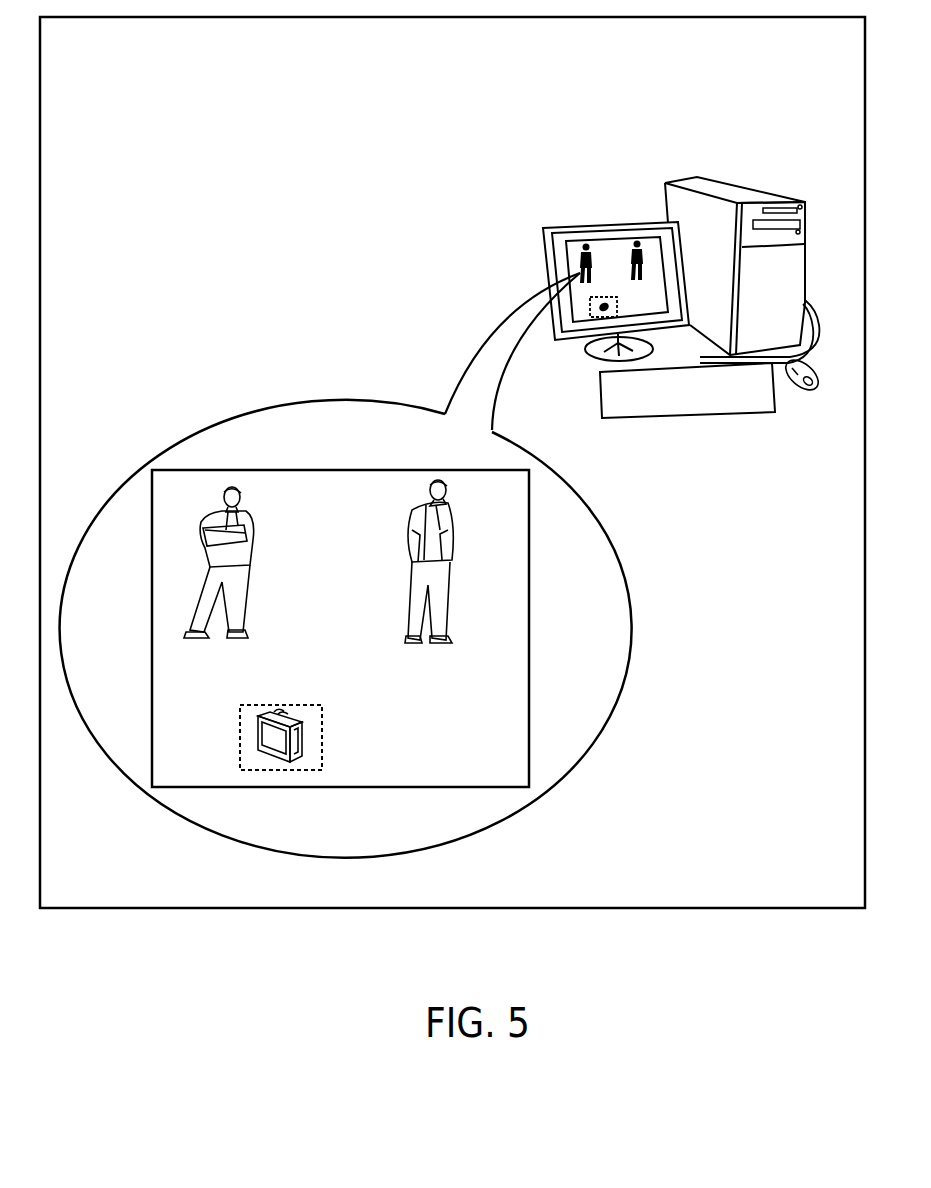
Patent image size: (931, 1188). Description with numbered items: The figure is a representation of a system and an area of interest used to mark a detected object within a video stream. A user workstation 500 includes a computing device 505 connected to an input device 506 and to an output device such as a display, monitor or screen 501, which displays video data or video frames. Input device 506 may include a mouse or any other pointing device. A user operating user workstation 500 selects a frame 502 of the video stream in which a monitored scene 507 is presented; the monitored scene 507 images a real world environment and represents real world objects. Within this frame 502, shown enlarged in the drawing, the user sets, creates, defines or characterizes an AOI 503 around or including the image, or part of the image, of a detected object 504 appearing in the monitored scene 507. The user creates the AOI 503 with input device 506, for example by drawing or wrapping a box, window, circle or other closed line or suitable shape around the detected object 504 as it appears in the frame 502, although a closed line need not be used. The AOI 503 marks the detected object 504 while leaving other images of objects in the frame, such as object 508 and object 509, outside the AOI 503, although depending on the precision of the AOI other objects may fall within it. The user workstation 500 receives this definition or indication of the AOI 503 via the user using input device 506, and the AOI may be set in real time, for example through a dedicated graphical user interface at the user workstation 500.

The user workstation 500 is at (210, 908).
The screen 501 is at (547, 273).
The frame 502 is at (284, 788).
The AOI 503 is at (323, 749).
The detected object 504 is at (258, 739).
The computing device 505 is at (665, 199).
The input device 506 is at (810, 392).
The monitored scene 507 is at (330, 760).
The object 508 is at (251, 511).
The object 509 is at (412, 589).